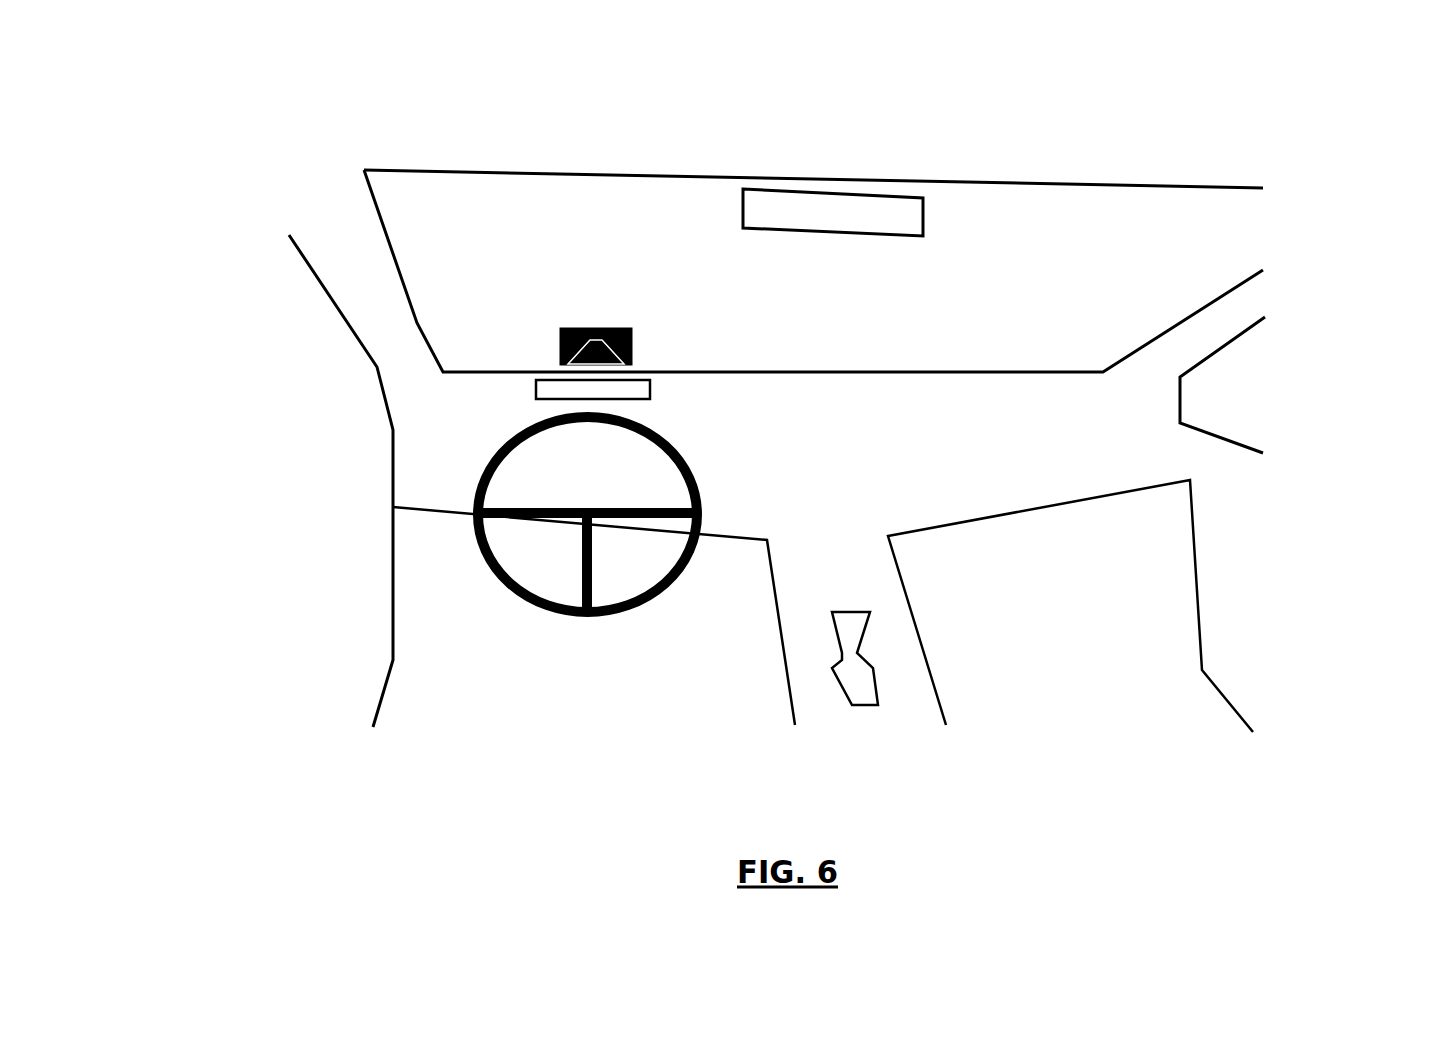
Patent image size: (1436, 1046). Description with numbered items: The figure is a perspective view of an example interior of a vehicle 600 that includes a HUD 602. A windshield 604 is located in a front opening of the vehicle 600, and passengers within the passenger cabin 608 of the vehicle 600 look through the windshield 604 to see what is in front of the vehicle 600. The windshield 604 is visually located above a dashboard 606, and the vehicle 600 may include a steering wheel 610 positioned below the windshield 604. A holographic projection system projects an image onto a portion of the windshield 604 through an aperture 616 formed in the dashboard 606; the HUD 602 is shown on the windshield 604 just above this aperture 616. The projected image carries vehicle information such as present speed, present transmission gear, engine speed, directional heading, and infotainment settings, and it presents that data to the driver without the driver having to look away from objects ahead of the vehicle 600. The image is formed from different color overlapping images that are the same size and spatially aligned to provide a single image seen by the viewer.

The vehicle 600 is at (346, 222).
The HUD 602 is at (530, 337).
The windshield 604 is at (506, 297).
The dashboard 606 is at (468, 420).
The passenger cabin 608 is at (1120, 315).
The steering wheel 610 is at (672, 445).
The aperture 616 is at (536, 380).